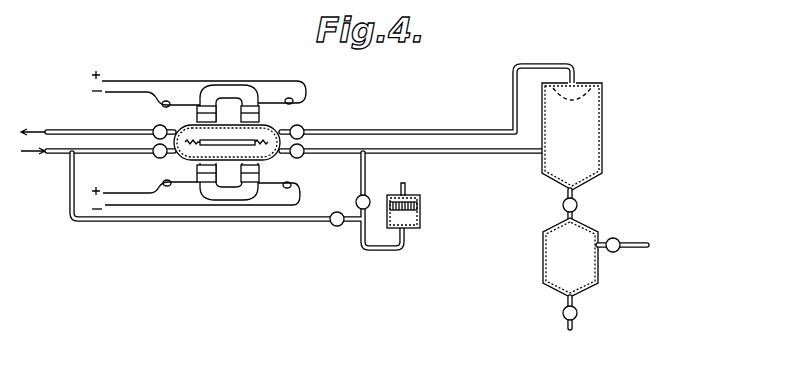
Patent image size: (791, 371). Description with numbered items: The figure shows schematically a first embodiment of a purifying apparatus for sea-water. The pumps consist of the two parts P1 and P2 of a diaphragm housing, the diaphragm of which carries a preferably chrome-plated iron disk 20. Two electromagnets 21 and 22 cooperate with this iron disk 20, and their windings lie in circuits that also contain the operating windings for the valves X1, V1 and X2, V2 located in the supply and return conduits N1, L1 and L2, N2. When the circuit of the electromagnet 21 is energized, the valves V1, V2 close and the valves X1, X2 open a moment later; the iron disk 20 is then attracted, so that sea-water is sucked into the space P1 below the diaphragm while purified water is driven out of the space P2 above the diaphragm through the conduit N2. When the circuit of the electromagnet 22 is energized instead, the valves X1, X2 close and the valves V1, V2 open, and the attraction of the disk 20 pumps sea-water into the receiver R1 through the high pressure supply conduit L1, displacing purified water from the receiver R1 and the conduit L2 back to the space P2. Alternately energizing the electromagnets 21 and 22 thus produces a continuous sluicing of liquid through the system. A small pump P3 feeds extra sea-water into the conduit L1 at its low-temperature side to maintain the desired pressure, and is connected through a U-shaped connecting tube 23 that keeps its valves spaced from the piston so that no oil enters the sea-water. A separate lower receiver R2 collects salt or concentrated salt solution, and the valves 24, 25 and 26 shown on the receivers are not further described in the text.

The iron disk 20 is at (206, 139).
The electromagnet 21 is at (234, 88).
The electromagnet 22 is at (242, 194).
The U-shaped connecting tube 23 is at (393, 250).
The valve between R1 and R2 24 is at (578, 206).
The outlet valve of R2 25 is at (616, 238).
The drain valve of R2 26 is at (579, 314).
The supply conduit N1 is at (86, 154).
The return conduit N2 is at (84, 128).
The valve X1 is at (156, 157).
The valve X2 is at (156, 128).
The valve V1 is at (301, 158).
The valve V2 is at (304, 128).
The pump part P1 is at (268, 160).
The pump part P2 is at (262, 131).
The small pump P3 is at (421, 211).
The high pressure supply conduit L1 is at (434, 167).
The return conduit L2 is at (438, 100).
The receiver R1 is at (596, 118).
The lower receiver R2 is at (592, 270).